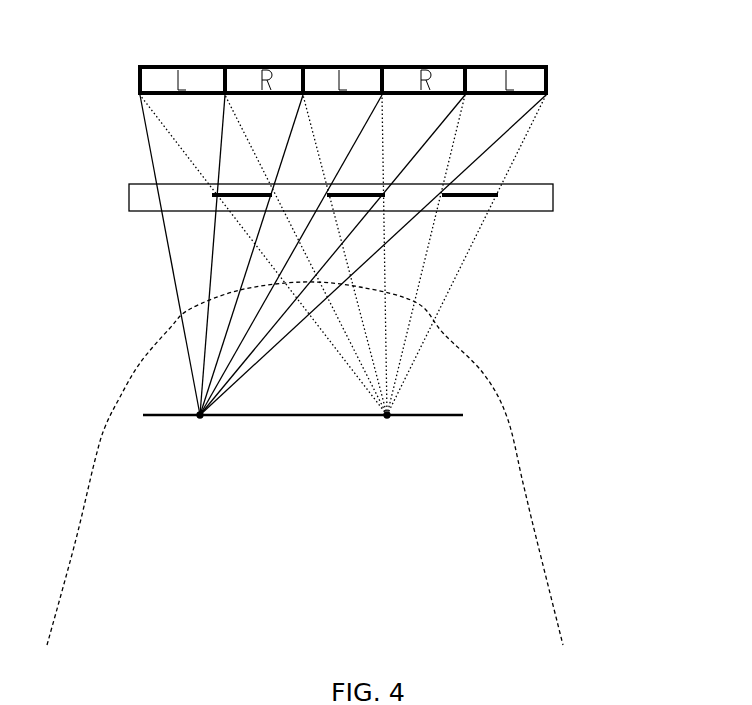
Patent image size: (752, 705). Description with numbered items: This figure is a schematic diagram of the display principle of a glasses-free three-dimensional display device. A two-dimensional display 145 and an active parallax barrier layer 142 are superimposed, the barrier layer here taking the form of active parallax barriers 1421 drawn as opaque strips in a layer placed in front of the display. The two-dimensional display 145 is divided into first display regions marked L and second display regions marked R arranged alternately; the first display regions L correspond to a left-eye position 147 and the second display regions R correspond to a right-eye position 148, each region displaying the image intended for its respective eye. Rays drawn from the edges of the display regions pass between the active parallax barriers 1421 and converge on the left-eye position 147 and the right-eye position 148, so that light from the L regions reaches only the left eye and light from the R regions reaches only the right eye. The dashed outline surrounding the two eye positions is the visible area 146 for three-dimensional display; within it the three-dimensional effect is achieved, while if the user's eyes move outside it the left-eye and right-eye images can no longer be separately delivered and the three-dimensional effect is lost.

The two-dimensional display 145 is at (532, 80).
The active parallax barrier layer 142 is at (530, 195).
The active parallax barriers 1421 is at (530, 195).
The left-eye position 147 is at (200, 418).
The right-eye position 148 is at (387, 418).
The visible area 146 is at (370, 533).